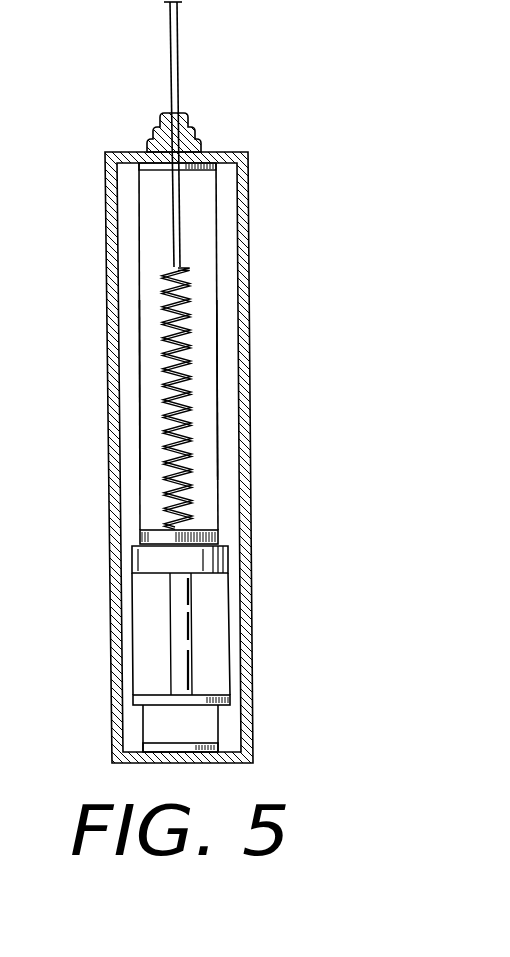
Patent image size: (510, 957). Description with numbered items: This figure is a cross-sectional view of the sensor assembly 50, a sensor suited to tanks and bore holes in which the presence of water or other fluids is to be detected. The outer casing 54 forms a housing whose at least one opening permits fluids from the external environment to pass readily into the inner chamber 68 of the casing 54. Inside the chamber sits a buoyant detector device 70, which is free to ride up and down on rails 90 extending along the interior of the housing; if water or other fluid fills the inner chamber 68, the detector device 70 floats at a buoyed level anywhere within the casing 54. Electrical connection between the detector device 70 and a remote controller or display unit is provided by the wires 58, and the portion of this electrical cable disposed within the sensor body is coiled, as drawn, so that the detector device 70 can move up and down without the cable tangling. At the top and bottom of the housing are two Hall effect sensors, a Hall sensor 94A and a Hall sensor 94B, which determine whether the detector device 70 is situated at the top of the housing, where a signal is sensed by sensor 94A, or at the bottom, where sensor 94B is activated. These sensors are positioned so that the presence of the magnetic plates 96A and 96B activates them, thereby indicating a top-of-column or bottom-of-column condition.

The sensor assembly 50 is at (285, 138).
The casing 54 is at (105, 233).
The wires 58 is at (187, 333).
The inner chamber 68 is at (227, 238).
The detector device 70 is at (204, 638).
The rails 90 is at (140, 389).
The Hall sensor 94A is at (207, 153).
The Hall sensor 94B is at (211, 694).
The magnetic plate 96A is at (210, 526).
The magnetic plate 96B is at (206, 745).